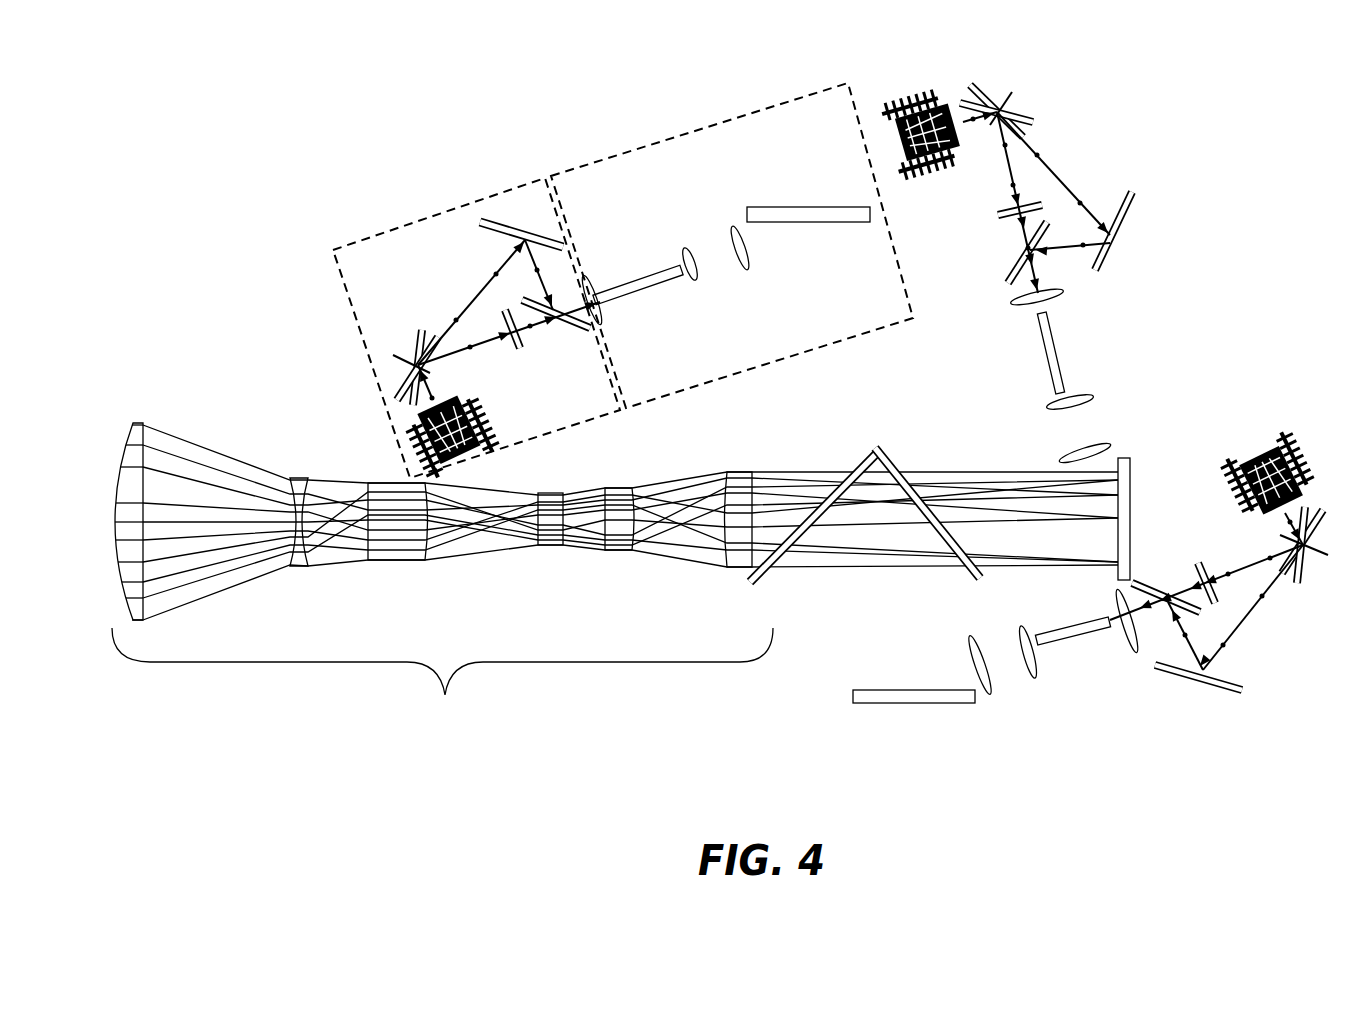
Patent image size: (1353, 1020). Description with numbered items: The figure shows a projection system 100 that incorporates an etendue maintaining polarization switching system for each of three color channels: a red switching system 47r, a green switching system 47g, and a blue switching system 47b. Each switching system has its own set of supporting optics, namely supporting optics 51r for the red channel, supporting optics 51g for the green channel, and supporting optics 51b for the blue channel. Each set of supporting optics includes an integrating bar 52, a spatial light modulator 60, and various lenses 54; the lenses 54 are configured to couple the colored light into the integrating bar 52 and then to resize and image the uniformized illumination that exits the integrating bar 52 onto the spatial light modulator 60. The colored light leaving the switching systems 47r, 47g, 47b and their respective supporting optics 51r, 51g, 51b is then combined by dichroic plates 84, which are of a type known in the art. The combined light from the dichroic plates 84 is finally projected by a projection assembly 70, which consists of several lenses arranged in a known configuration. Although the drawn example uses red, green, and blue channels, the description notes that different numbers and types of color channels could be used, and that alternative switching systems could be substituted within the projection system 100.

The projection system 100 is at (214, 127).
The projection assembly 70 is at (621, 574).
The dichroic plates 84 is at (863, 457).
The switching system 47b is at (453, 210).
The supporting optics 51b is at (577, 170).
The lenses 54 is at (736, 228).
The integrating bar 52 is at (652, 288).
The spatial light modulator 60 is at (870, 214).
The switching system 47g is at (1102, 148).
The supporting optics 51g is at (1096, 335).
The switching system 47r is at (1258, 655).
The supporting optics 51r is at (1018, 705).